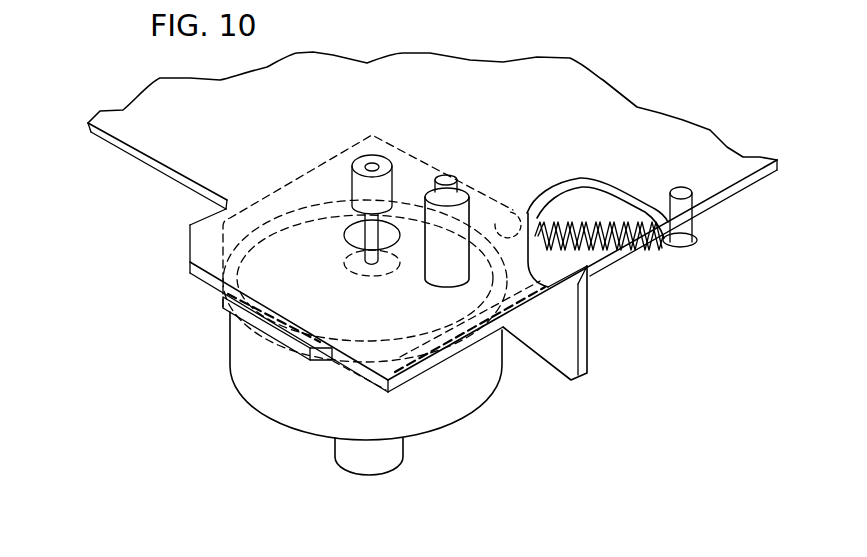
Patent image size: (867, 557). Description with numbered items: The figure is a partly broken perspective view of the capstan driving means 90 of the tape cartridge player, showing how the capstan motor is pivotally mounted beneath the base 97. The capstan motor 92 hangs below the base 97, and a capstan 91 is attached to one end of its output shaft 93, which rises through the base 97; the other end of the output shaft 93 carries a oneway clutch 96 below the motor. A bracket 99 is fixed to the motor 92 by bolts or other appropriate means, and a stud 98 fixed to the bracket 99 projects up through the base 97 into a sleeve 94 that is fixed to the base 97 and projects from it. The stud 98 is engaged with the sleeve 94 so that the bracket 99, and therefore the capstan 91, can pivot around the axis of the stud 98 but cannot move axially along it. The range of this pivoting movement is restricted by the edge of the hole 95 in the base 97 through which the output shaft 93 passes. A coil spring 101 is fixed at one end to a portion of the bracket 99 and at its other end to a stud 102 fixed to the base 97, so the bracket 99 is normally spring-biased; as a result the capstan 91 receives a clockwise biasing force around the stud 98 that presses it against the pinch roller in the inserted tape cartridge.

The capstan driving means 90 is at (452, 105).
The capstan 91 is at (365, 156).
The capstan motor 92 is at (253, 388).
The output shaft 93 is at (350, 249).
The sleeve 94 is at (433, 258).
The hole 95 is at (364, 242).
The oneway clutch 96 is at (355, 455).
The base 97 is at (660, 127).
The stud 98 is at (452, 177).
The bracket 99 is at (568, 348).
The coil spring 101 is at (608, 247).
The stud 102 is at (695, 211).